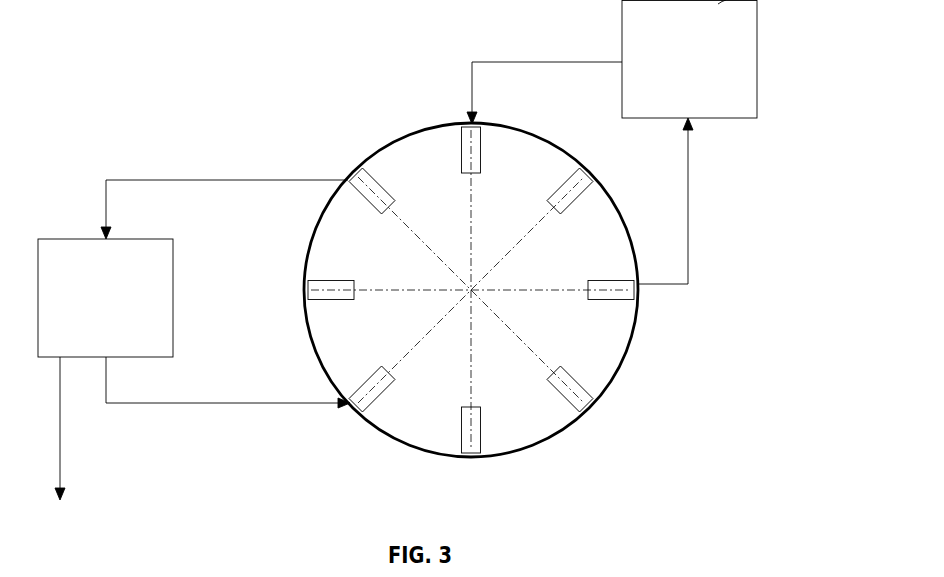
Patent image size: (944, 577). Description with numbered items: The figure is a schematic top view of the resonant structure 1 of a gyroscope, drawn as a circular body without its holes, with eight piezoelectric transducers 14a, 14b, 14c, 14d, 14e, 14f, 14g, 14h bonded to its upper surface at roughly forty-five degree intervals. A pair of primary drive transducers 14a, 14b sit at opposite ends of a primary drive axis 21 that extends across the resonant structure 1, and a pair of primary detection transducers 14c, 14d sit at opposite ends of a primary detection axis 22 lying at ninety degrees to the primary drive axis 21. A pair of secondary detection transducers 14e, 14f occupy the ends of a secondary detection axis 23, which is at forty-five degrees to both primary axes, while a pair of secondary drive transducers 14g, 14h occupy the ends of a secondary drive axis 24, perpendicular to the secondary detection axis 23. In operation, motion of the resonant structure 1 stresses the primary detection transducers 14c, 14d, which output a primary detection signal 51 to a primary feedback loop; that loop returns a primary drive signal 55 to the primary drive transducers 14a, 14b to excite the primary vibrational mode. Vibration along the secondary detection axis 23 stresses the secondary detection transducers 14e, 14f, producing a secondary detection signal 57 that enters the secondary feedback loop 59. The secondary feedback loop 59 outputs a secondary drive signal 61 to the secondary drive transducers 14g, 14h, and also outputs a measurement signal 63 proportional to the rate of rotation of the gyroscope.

The resonant structure 1 is at (312, 226).
The primary drive transducer 14a is at (462, 124).
The primary drive transducer 14b is at (460, 445).
The primary detection transducer 14c is at (639, 291).
The primary detection transducer 14d is at (308, 290).
The secondary detection transducer 14e is at (583, 394).
The secondary detection transducer 14f is at (352, 178).
The secondary drive transducer 14g is at (583, 176).
The secondary drive transducer 14h is at (349, 409).
The primary drive axis 21 is at (474, 193).
The primary detection axis 22 is at (555, 293).
The secondary detection axis 23 is at (540, 362).
The secondary drive axis 24 is at (528, 242).
The primary detection signal 51 is at (690, 205).
The primary drive signal 55 is at (532, 62).
The secondary detection signal 57 is at (168, 180).
The secondary feedback loop 59 is at (77, 239).
The secondary drive signal 61 is at (145, 404).
The measurement signal 63 is at (62, 445).